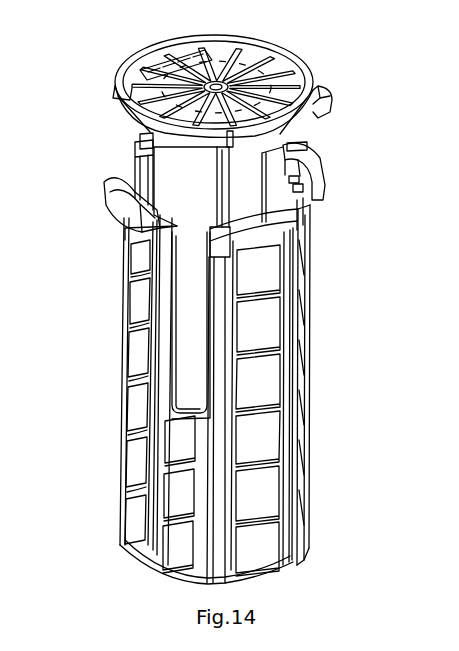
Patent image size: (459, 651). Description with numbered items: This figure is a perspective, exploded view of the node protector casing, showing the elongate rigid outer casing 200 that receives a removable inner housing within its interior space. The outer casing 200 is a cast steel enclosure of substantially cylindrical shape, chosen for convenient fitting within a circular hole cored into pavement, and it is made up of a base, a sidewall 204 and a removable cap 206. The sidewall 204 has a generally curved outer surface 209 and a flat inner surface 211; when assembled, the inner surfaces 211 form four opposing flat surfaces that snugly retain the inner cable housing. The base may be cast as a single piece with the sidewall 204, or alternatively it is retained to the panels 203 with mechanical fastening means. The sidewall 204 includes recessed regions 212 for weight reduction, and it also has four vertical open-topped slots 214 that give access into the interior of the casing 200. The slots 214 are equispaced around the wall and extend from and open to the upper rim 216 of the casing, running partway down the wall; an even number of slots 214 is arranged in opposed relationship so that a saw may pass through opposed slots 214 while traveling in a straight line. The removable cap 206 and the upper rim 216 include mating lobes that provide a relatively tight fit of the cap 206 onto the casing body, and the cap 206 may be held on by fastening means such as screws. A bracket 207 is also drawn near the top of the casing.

The outer casing 200 is at (350, 275).
The panels 203 is at (150, 539).
The sidewall 204 is at (128, 412).
The removable cap 206 is at (313, 52).
The latch bracket 207 is at (308, 203).
The curved outer surface 209 is at (135, 553).
The flat inner surface 211 is at (175, 172).
The recessed regions 212 is at (258, 485).
The vertical open-topped slots 214 is at (185, 330).
The upper rim 216 is at (138, 157).